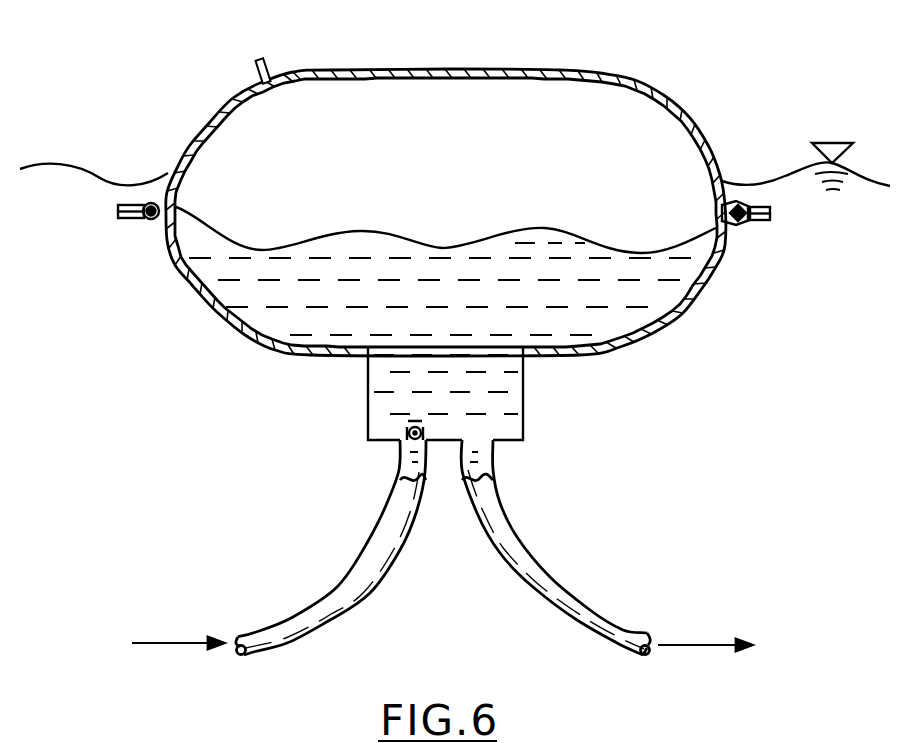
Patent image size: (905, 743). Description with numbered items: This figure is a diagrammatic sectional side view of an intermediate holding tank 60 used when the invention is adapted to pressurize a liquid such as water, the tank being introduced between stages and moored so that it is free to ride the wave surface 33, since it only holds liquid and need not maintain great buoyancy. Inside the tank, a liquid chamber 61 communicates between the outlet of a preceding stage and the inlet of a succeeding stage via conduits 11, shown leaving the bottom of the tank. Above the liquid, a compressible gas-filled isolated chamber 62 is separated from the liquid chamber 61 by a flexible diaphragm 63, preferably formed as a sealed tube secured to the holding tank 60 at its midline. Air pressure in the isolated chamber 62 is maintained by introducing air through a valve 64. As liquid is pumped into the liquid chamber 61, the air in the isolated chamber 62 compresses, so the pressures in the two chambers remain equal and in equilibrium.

The intermediate holding tank 60 is at (444, 226).
The isolated chamber 62 is at (453, 108).
The valve 64 is at (268, 67).
The wave surface 33 is at (760, 185).
The flexible diaphragm 63 is at (446, 247).
The liquid chamber 61 is at (625, 300).
The conduits 11 is at (326, 588).